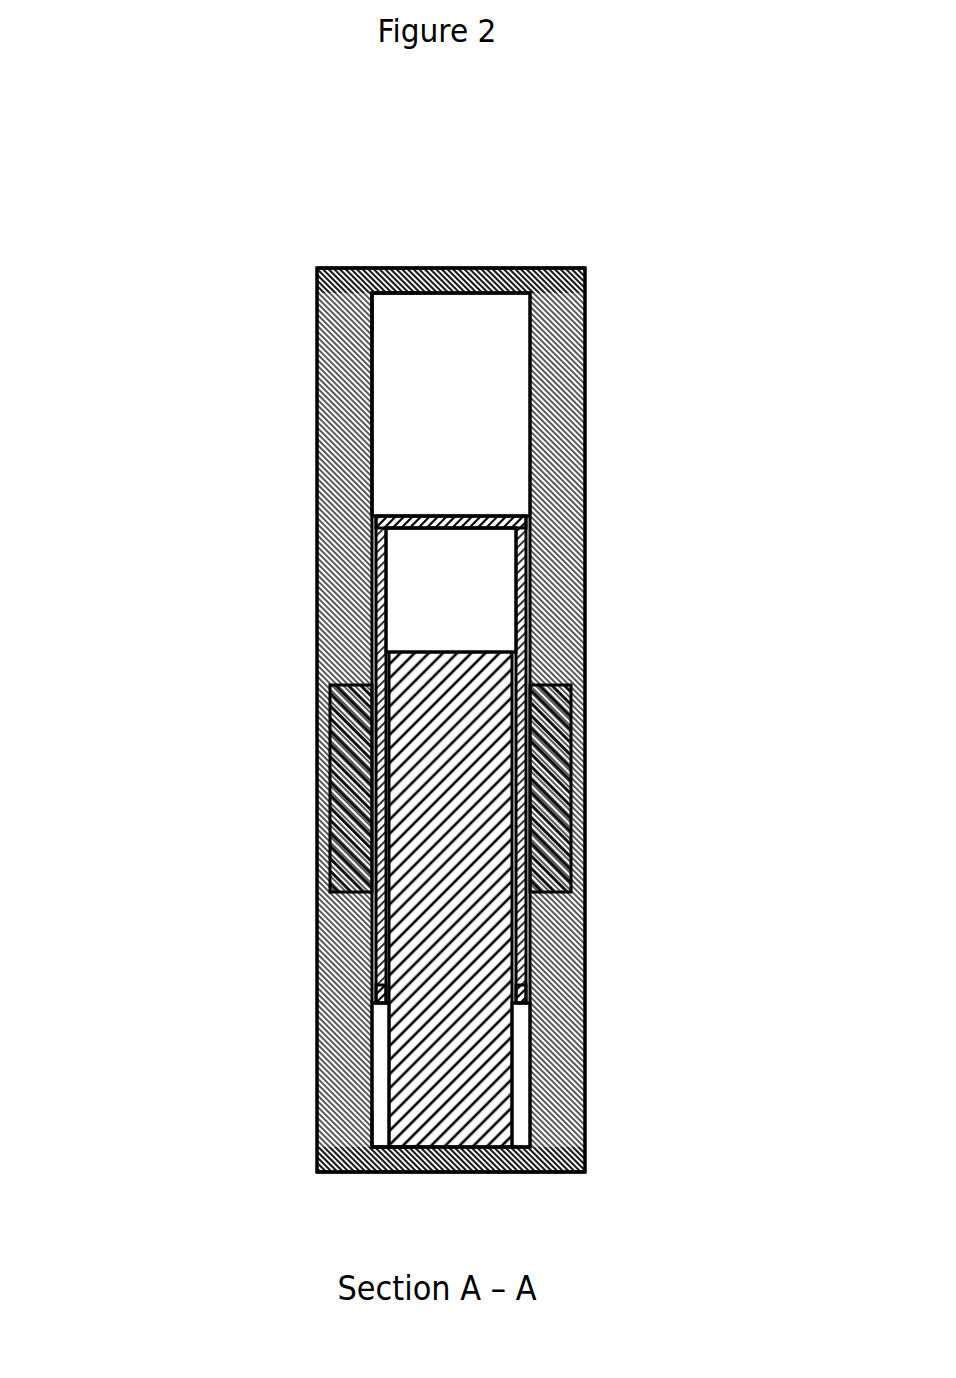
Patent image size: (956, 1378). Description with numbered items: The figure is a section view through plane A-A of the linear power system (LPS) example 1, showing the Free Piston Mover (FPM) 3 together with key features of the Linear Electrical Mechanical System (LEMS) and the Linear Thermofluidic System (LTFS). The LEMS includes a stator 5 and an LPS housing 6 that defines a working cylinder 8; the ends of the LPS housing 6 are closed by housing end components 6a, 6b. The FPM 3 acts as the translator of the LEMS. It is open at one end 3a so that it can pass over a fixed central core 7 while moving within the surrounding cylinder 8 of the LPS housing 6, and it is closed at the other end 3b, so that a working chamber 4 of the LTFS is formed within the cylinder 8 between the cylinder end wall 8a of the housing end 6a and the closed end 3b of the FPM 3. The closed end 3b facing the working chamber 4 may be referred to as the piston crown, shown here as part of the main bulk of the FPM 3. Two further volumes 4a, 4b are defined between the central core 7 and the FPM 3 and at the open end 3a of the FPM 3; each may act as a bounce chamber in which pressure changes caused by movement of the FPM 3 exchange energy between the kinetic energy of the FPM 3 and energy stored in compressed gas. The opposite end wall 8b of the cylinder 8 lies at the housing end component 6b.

The thermal battery cell assembly 1 is at (573, 245).
The free piston mover 3 is at (378, 594).
The open end of the FPM 3a is at (522, 1002).
The closed end of the FPM 3b is at (463, 515).
The working chamber 4 is at (467, 363).
The bounce chamber 4a is at (443, 607).
The bounce chamber 4b is at (517, 1082).
The stator 5 is at (320, 787).
The LPS housing 6 is at (545, 434).
The housing end component 6a is at (585, 268).
The housing end component 6b is at (585, 1160).
The fixed central core 7 is at (422, 1037).
The working cylinder 8 is at (372, 407).
The cylinder end wall 8a is at (387, 295).
The lower inner corner of housing 8b is at (376, 1144).